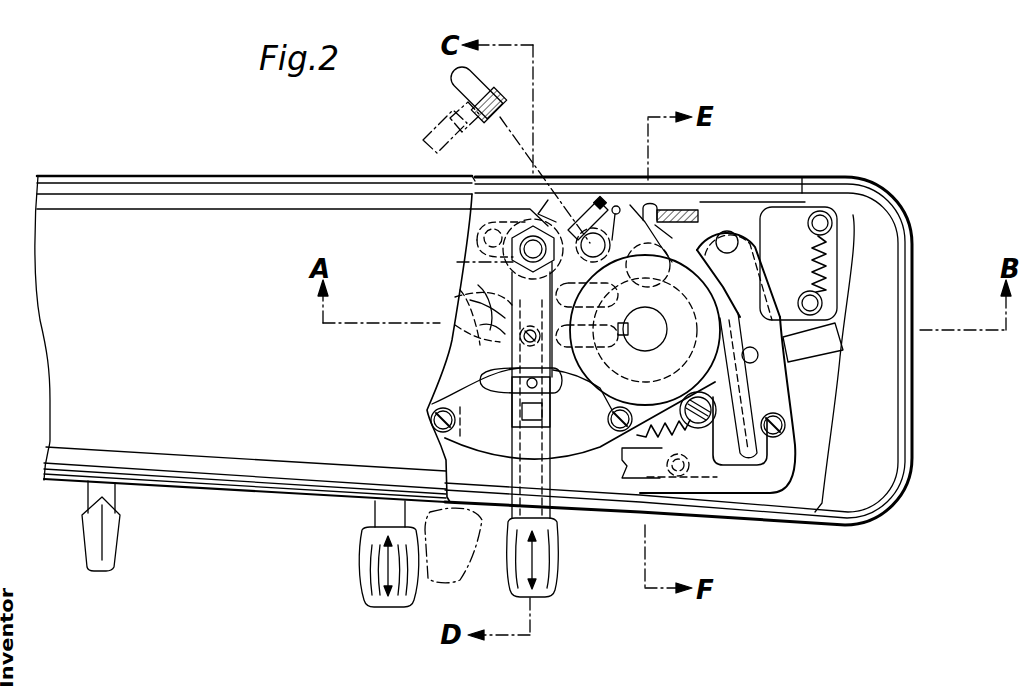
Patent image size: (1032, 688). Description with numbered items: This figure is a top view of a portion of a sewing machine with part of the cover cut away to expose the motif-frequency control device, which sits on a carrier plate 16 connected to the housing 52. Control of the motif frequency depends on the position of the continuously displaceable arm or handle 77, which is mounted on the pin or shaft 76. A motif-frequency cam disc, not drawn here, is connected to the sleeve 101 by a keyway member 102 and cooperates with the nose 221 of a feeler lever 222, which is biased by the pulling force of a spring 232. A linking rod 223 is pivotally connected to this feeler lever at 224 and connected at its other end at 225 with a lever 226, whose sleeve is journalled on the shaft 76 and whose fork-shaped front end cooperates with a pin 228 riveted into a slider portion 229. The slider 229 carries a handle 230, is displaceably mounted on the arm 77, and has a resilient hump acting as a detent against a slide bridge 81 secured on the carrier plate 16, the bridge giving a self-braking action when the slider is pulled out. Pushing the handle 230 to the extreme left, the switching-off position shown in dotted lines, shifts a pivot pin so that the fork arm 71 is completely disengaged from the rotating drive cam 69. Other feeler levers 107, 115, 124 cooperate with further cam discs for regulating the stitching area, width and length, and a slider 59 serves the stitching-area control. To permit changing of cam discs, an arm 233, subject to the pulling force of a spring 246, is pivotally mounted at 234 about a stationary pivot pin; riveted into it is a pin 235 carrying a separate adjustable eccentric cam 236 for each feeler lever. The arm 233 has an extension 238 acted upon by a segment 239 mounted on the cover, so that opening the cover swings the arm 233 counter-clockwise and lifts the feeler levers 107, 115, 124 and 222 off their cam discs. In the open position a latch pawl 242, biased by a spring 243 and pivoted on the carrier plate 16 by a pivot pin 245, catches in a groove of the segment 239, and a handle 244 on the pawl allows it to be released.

The carrier plate 16 is at (603, 452).
The housing 52 is at (913, 388).
The slider 59 is at (360, 573).
The rotating drive cam 69 is at (480, 303).
The fork arm 71 is at (608, 418).
The shaft 76 is at (525, 248).
The arm or handle 77 is at (530, 380).
The slide bridge 81 is at (493, 480).
The sleeve 101 is at (670, 327).
The keyway member 102 is at (636, 435).
The feeler lever 107 is at (782, 463).
The feeler lever 115 is at (790, 220).
The feeler lever 124 is at (800, 360).
The nose 221 is at (807, 305).
The feeler lever 222 is at (760, 363).
The linking rod 223 is at (748, 462).
The pivot connection 224 is at (765, 385).
The pivot connection 225 is at (520, 340).
The lever 226 is at (513, 395).
The pin 228 is at (437, 433).
The slider portion 229 is at (550, 483).
The handle 230 is at (435, 583).
The spring 232 is at (835, 250).
The arm 233 is at (740, 220).
The pivot 234 is at (700, 215).
The pin 235 is at (697, 428).
The eccentric cam 236 is at (707, 330).
The extension 238 is at (649, 206).
The segment 239 is at (690, 210).
The latch pawl 242 is at (508, 88).
The spring 243 is at (543, 208).
The handle 244 is at (447, 83).
The pivot pin 245 is at (487, 330).
The spring 246 is at (662, 437).